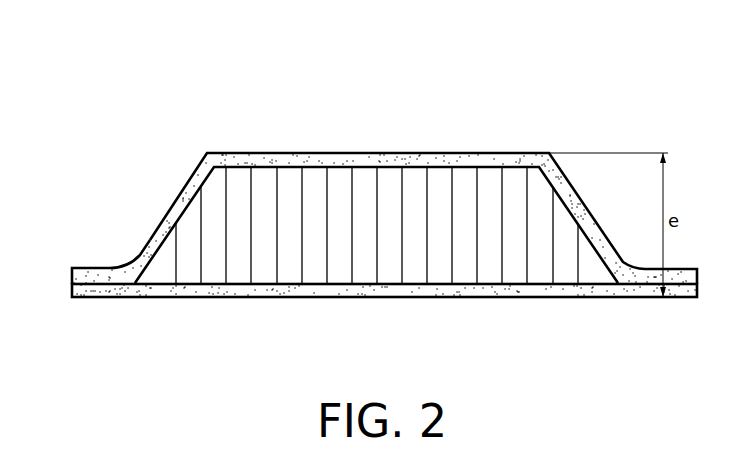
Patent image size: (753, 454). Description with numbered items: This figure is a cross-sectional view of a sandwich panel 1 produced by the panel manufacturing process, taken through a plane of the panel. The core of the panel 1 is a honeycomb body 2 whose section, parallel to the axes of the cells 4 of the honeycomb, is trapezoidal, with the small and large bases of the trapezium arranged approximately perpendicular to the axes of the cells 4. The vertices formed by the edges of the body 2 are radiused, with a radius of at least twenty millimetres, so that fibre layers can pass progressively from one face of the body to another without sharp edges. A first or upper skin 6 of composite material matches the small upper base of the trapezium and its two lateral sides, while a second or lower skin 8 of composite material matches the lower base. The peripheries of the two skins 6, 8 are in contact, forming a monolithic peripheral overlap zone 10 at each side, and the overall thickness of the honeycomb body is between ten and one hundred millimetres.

The panel 1 is at (538, 141).
The honeycomb body 2 is at (468, 261).
The cells 4 is at (318, 263).
The upper skin 6 is at (410, 160).
The lower skin 8 is at (148, 292).
The monolithic peripheral overlap zone 10 is at (105, 262).